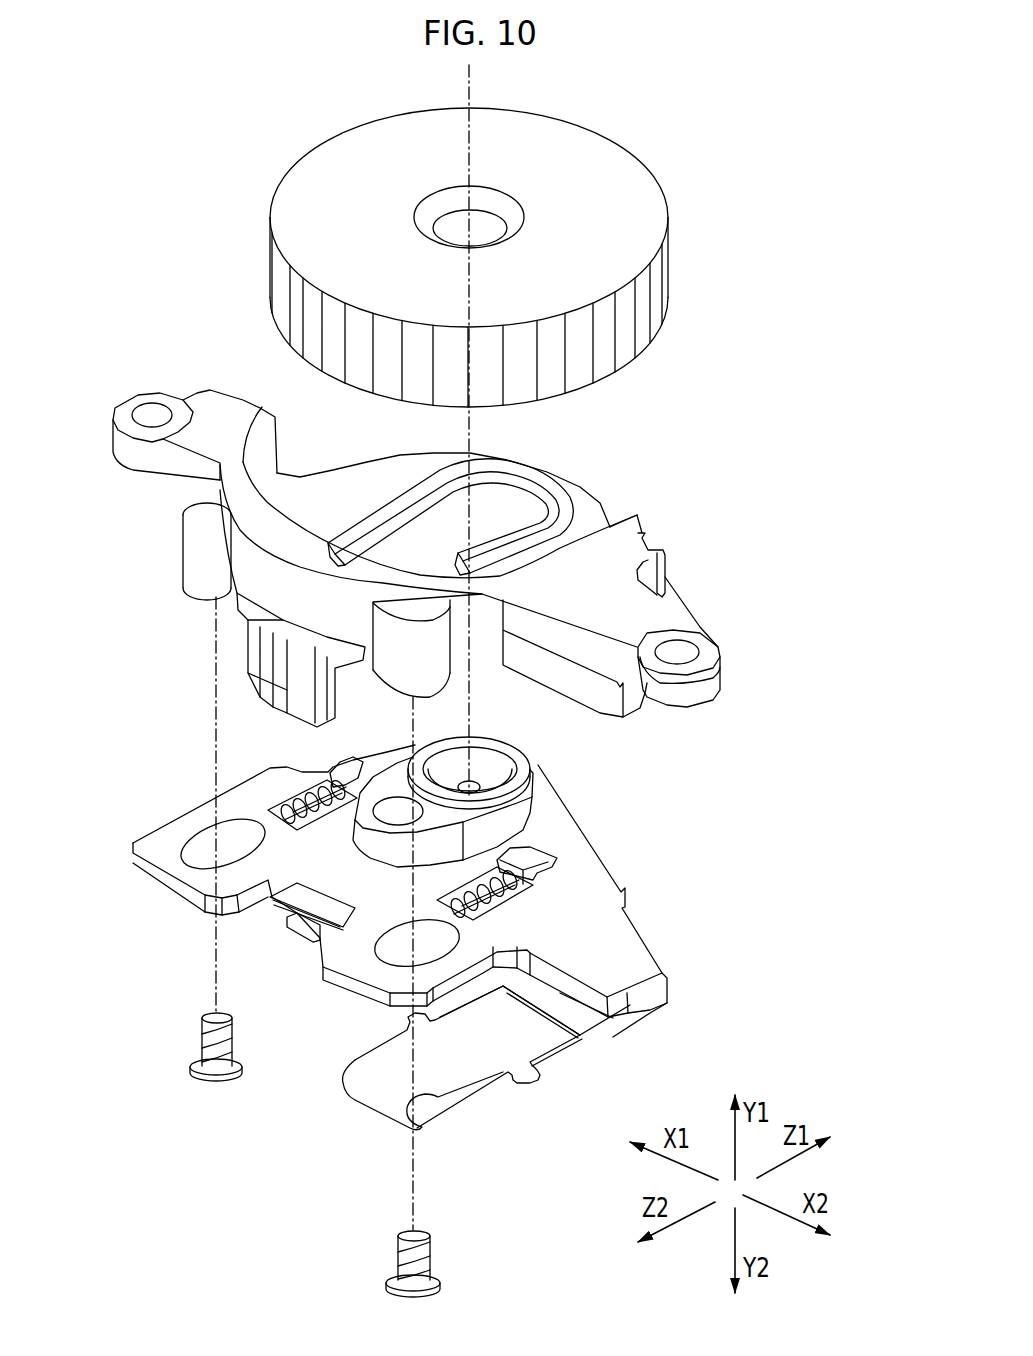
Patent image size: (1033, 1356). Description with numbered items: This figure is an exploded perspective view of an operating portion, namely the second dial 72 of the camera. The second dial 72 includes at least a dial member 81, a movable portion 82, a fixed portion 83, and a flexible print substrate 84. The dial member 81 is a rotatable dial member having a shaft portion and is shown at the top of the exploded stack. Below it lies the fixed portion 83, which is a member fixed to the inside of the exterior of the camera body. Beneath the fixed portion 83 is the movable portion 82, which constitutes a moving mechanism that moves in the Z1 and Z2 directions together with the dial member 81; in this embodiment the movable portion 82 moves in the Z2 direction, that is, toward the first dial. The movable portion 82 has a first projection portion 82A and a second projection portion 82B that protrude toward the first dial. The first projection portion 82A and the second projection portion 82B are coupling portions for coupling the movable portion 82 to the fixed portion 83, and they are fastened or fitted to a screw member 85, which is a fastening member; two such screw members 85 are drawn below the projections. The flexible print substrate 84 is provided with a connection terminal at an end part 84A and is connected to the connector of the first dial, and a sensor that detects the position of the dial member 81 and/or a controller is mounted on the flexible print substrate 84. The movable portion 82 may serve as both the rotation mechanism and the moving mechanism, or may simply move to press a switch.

The second dial 72 is at (725, 160).
The dial member 81 is at (563, 122).
The fixed portion 83 is at (643, 547).
The movable portion 82 is at (603, 877).
The first projection portion 82A is at (175, 862).
The second projection portion 82B is at (377, 975).
The flexible print substrate 84 is at (450, 1078).
The end part 84A is at (527, 1022).
The screw member 85 is at (225, 1038).